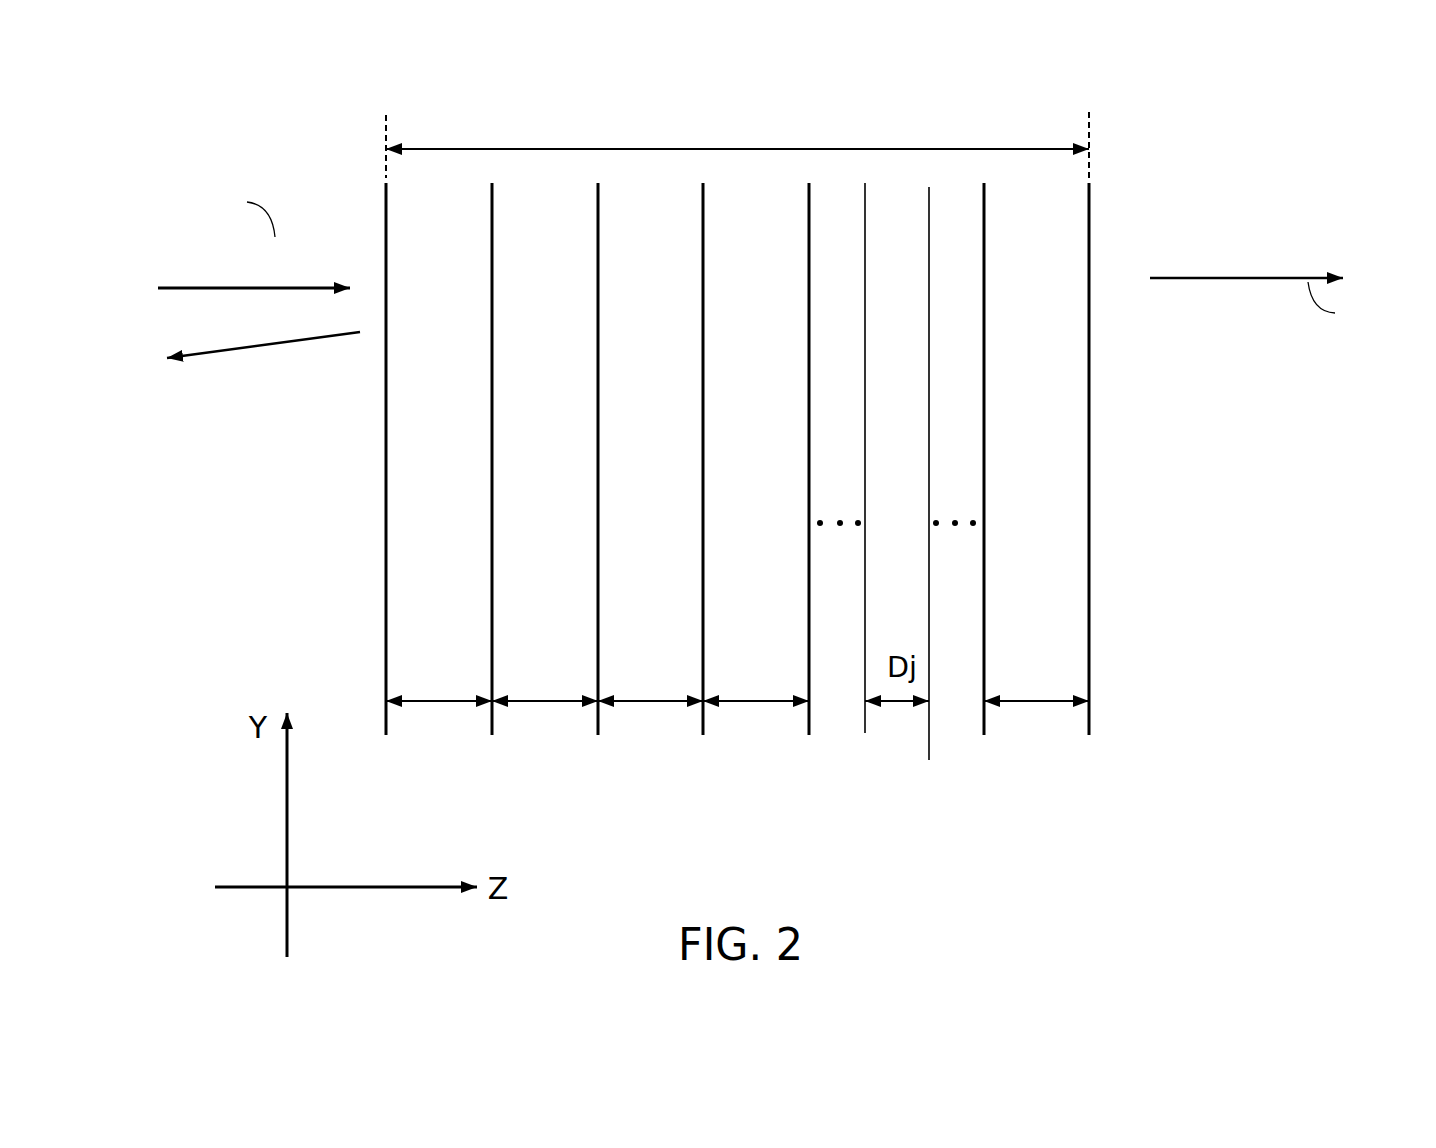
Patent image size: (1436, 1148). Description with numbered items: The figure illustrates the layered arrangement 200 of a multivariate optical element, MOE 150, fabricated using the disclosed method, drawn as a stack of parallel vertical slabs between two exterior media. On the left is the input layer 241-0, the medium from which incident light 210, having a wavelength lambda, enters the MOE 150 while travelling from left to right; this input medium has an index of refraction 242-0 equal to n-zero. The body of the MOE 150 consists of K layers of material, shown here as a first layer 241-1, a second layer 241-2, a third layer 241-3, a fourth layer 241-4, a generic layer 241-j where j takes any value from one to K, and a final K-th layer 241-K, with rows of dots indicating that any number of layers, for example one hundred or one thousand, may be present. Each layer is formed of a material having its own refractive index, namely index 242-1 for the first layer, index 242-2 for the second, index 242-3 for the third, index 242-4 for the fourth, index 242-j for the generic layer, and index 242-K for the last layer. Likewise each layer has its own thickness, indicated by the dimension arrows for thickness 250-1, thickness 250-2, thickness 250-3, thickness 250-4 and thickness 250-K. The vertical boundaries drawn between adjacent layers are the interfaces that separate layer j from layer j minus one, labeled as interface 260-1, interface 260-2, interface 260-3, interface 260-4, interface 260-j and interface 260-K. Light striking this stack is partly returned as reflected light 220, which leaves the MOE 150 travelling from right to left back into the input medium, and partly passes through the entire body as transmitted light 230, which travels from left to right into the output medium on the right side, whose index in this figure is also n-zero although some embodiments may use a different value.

The multilayer optical element system 200 is at (362, 117).
The MOE 150 is at (737, 129).
The incident light 210 is at (170, 293).
The reflected light 220 is at (313, 338).
The transmitted light 230 is at (1256, 280).
The input layer 241-0 is at (327, 589).
The first layer 241-1 is at (410, 429).
The second layer 241-2 is at (517, 429).
The third layer 241-3 is at (622, 426).
The fourth layer 241-4 is at (722, 426).
The layer j 241-j is at (873, 431).
The K-th layer 241-K is at (1010, 429).
The index of refraction of input layer 242-0 is at (287, 512).
The refractive index of first layer 242-1 is at (446, 546).
The refractive index of second layer 242-2 is at (551, 546).
The refractive index of third layer 242-3 is at (656, 546).
The refractive index of fourth layer 242-4 is at (761, 546).
The refractive index of layer j 242-j is at (901, 548).
The refractive index of K-th layer 242-K is at (1038, 548).
The thickness of first layer 250-1 is at (422, 703).
The thickness of second layer 250-2 is at (532, 703).
The thickness of third layer 250-3 is at (641, 703).
The thickness of fourth layer 250-4 is at (744, 703).
The thickness of K-th layer 250-K is at (1014, 703).
The first interface 260-1 is at (386, 735).
The second interface 260-2 is at (492, 735).
The third interface 260-3 is at (598, 735).
The fourth interface 260-4 is at (703, 735).
The interface j 260-j is at (865, 733).
The K-th interface 260-K is at (984, 735).